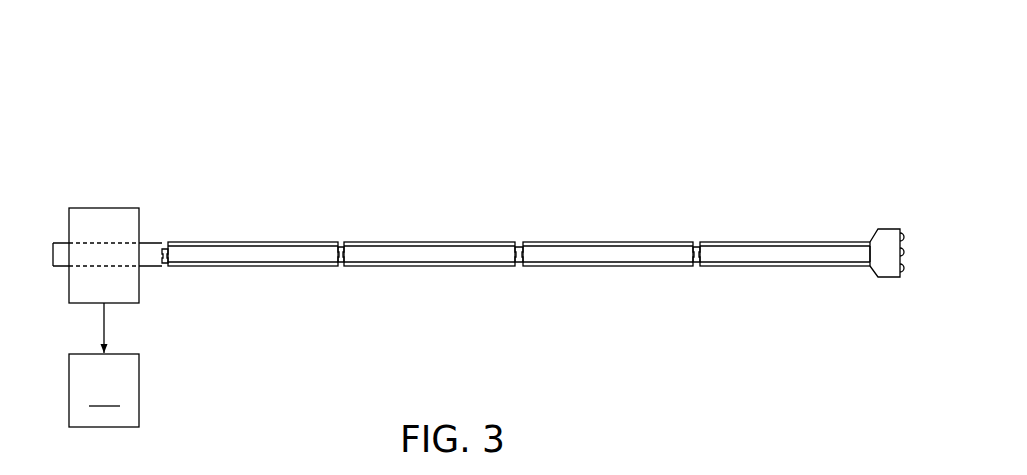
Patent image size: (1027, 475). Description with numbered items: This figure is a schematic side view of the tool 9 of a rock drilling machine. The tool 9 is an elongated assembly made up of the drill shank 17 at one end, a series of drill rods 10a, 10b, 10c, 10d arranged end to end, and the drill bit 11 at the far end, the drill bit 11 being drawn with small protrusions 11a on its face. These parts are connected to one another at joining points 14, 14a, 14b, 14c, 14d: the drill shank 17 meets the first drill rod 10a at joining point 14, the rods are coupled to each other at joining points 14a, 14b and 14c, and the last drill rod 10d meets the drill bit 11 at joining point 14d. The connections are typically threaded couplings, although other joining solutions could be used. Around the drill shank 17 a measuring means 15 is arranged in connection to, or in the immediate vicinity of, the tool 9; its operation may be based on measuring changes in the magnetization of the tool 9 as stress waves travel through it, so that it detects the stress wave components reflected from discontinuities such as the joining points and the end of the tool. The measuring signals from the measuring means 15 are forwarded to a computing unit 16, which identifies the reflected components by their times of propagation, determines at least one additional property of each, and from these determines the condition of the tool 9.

The tool 9 is at (215, 138).
The drill rod 10a is at (302, 248).
The drill rod 10b is at (382, 253).
The drill rod 10c is at (552, 252).
The drill rod 10d is at (772, 253).
The drill bit 11 is at (875, 245).
The head engagement bumps 11a is at (902, 230).
The joining point 14 is at (165, 268).
The joining point 14a is at (340, 273).
The joining point 14b is at (518, 271).
The joining point 14c is at (693, 273).
The joining point 14d is at (868, 276).
The measuring means 15 is at (76, 222).
The computing unit 16 is at (104, 365).
The drill shank 17 is at (148, 250).